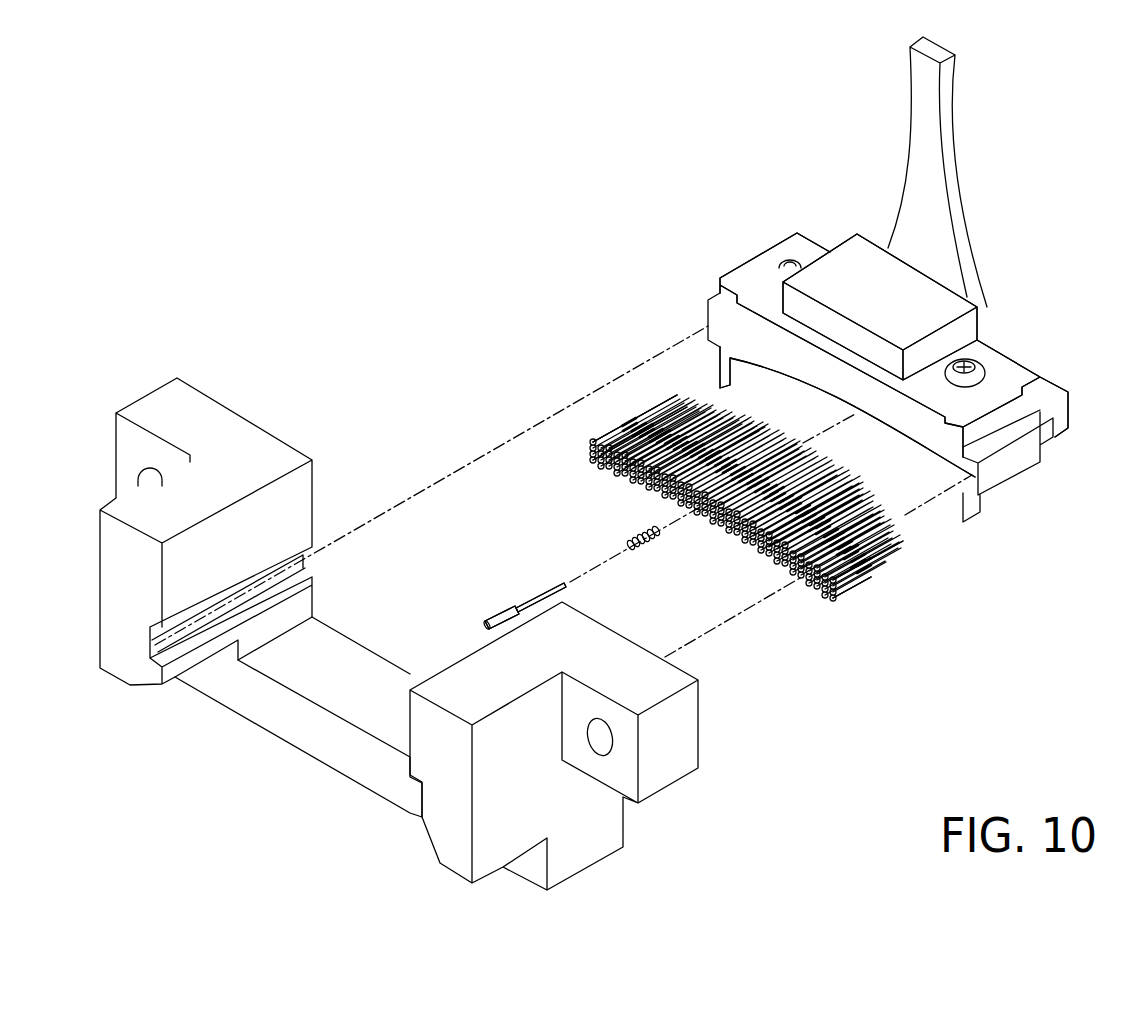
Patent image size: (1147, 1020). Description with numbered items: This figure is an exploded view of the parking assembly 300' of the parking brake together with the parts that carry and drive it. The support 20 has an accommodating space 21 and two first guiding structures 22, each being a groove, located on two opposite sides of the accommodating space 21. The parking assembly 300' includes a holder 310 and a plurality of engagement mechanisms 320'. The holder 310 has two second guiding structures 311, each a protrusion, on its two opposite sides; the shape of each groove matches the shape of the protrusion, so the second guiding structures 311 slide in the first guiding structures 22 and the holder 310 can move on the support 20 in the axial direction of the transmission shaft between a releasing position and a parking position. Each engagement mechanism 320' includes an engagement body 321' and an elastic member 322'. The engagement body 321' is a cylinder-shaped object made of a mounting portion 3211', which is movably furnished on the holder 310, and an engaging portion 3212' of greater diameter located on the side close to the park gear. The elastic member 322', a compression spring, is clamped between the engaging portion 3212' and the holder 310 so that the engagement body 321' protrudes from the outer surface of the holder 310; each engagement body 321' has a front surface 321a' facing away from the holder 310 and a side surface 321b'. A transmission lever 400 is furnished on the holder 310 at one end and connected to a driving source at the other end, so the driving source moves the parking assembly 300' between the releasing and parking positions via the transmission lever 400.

The support 20 is at (678, 740).
The accommodating space 21 is at (342, 680).
The first guiding structure 22 is at (280, 598).
The parking assembly 300' is at (911, 355).
The holder 310 is at (1063, 403).
The second guiding structure 311 is at (708, 318).
The engagement mechanism 320' is at (797, 515).
The engagement body 321' is at (685, 512).
The front surface 321a' is at (669, 489).
The side surface 321b' is at (734, 468).
The mounting portion 3211' is at (549, 579).
The engaging portion 3212' is at (495, 604).
The elastic member 322' is at (801, 536).
The transmission lever 400 is at (948, 158).